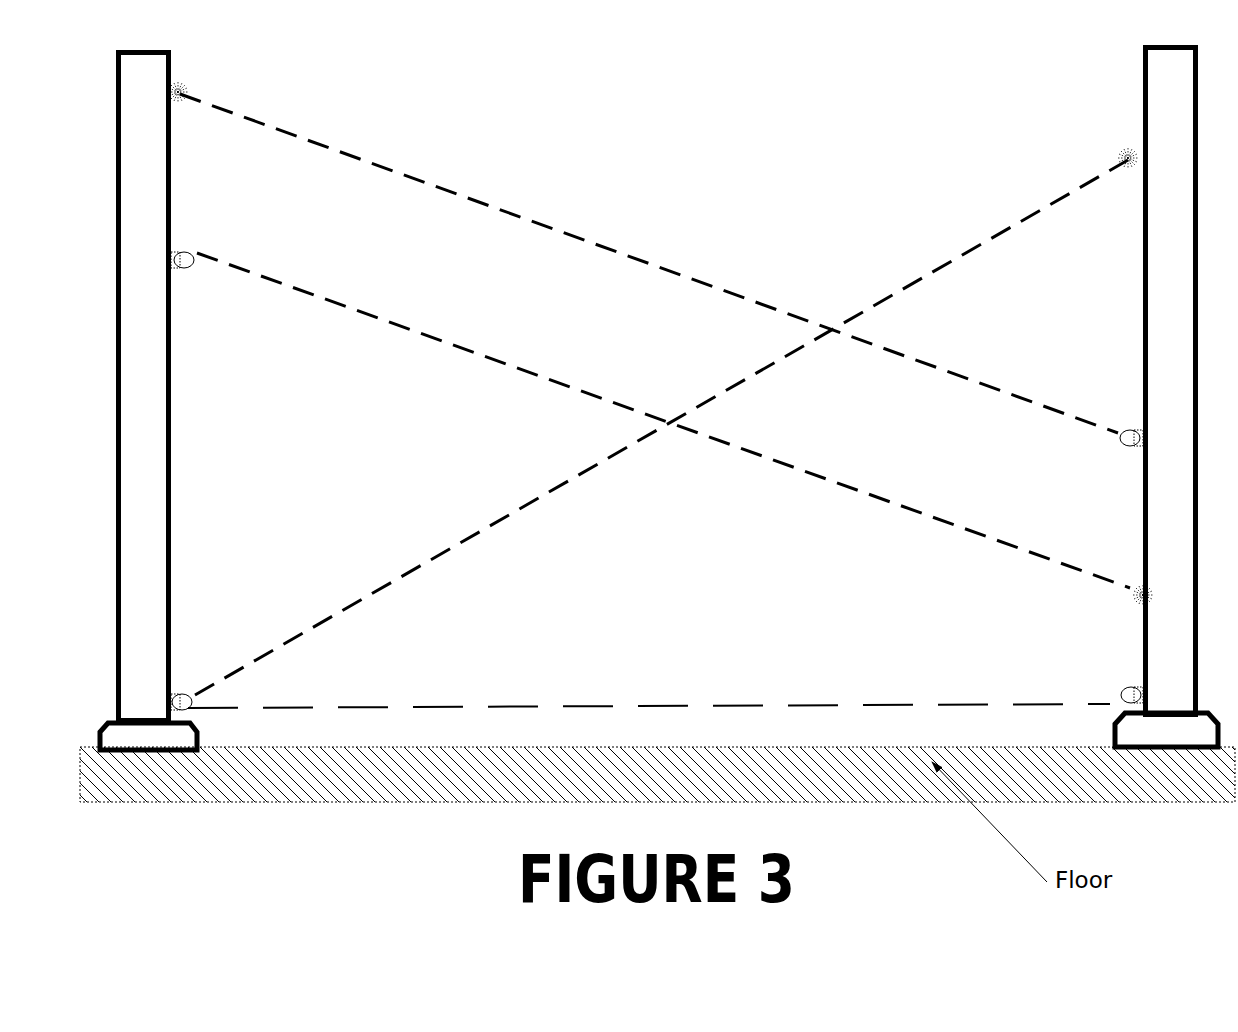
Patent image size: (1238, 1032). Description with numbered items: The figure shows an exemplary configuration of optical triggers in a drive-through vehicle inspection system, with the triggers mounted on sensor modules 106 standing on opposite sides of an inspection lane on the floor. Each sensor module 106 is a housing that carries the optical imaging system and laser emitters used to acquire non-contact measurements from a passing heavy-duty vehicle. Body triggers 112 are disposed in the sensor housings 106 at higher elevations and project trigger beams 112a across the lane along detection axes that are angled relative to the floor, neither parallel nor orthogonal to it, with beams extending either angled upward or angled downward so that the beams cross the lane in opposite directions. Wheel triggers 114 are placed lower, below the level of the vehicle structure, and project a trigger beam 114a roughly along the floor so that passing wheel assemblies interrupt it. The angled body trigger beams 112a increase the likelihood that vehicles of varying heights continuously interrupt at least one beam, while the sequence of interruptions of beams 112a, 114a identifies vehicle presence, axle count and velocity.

The sensor module 106 is at (136, 172).
The body trigger 112 is at (193, 247).
The trigger beam 112a is at (543, 224).
The wheel trigger 114 is at (1125, 688).
The trigger beam 114a is at (790, 700).